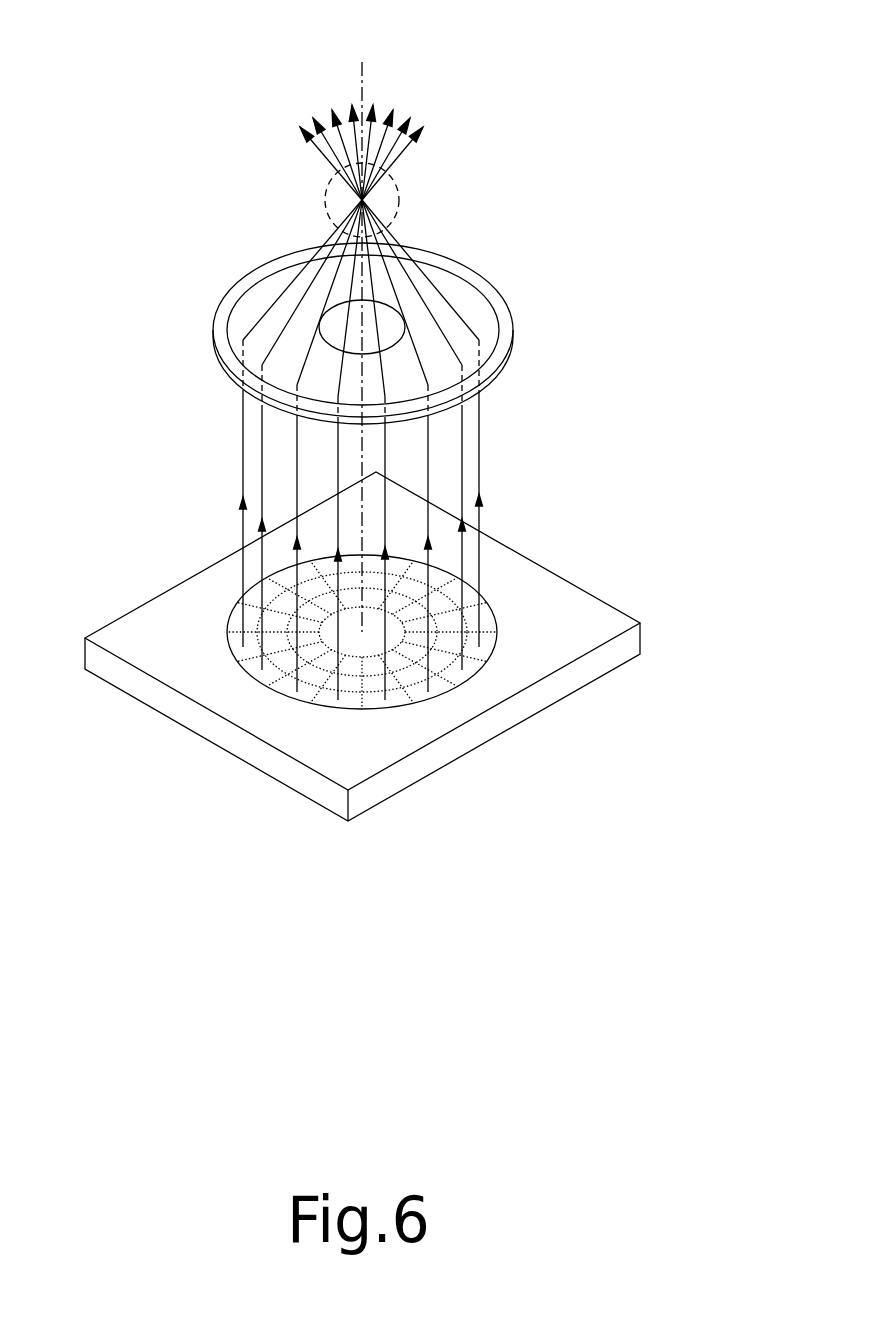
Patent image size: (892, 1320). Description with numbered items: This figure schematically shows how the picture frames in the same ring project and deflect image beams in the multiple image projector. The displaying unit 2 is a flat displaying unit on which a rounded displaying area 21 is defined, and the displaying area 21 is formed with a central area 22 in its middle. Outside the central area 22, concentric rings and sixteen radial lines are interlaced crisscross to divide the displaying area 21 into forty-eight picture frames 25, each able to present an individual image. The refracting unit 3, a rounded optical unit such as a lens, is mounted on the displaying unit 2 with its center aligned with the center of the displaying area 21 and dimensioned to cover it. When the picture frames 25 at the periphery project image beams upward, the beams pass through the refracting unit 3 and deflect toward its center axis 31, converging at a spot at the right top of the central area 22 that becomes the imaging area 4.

The displaying unit 2 is at (399, 646).
The displaying area 21 is at (195, 662).
The central area 22 is at (343, 625).
The picture frames 25 is at (470, 678).
The refracting unit 3 is at (448, 288).
The center axis 31 is at (362, 97).
The imaging area 4 is at (337, 200).